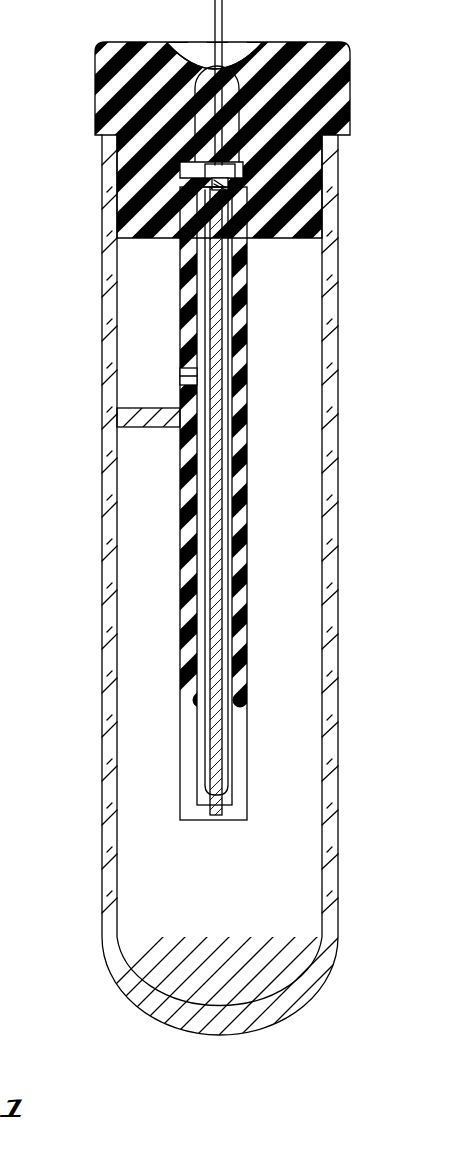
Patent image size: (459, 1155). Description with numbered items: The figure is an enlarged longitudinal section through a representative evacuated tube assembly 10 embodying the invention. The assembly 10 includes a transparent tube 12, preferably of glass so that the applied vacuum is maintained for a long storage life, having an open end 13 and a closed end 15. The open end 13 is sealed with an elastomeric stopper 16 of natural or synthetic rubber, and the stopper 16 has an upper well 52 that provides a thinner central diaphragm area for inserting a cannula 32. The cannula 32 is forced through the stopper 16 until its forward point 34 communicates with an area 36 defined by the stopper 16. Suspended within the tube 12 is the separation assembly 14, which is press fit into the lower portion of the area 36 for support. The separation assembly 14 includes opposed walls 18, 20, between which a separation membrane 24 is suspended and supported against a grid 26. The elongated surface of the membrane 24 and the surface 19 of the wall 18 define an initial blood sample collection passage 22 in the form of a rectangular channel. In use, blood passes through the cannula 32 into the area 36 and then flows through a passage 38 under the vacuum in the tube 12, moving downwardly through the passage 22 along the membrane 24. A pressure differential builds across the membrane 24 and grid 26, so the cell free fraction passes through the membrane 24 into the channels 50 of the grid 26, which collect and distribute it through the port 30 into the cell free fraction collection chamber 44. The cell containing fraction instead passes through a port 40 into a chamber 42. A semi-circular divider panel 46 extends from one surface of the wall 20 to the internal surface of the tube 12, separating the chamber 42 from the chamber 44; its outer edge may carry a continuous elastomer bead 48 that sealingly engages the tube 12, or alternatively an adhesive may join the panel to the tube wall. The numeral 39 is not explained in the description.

The evacuated tube assembly 10 is at (365, 283).
The transparent tube 12 is at (330, 780).
The open end 13 is at (95, 120).
The separation assembly 14 is at (180, 356).
The closed end 15 is at (260, 1025).
The elastomeric stopper 16 is at (337, 66).
The wall 18 is at (240, 555).
The surface of wall 19 is at (222, 500).
The wall 20 is at (182, 628).
The blood sample collection passage 22 is at (228, 620).
The separation membrane 24 is at (218, 764).
The grid 26 is at (205, 290).
The port 30 is at (182, 378).
The cannula 32 is at (222, 28).
The forward point of cannula 34 is at (122, 170).
The area defined by stopper 36 is at (232, 172).
The passage 38 is at (228, 197).
The passage 39 is at (228, 195).
The port 40 is at (225, 820).
The cell containing fraction chamber 42 is at (290, 925).
The cell free fraction collection chamber 44 is at (138, 272).
The divider panel 46 is at (163, 426).
The elastomer bead 48 is at (112, 395).
The channels 50 is at (208, 522).
The upper well 52 is at (192, 60).